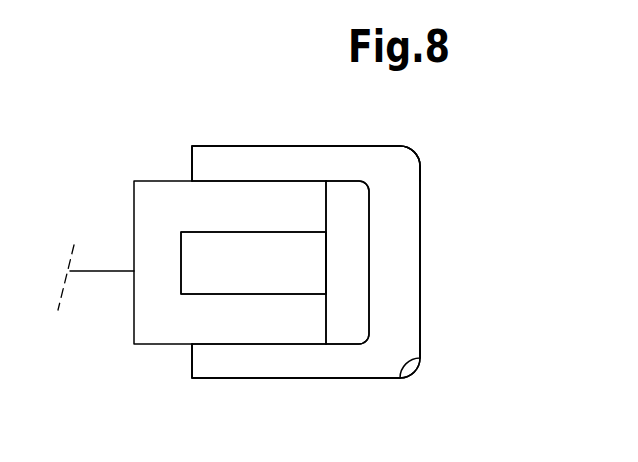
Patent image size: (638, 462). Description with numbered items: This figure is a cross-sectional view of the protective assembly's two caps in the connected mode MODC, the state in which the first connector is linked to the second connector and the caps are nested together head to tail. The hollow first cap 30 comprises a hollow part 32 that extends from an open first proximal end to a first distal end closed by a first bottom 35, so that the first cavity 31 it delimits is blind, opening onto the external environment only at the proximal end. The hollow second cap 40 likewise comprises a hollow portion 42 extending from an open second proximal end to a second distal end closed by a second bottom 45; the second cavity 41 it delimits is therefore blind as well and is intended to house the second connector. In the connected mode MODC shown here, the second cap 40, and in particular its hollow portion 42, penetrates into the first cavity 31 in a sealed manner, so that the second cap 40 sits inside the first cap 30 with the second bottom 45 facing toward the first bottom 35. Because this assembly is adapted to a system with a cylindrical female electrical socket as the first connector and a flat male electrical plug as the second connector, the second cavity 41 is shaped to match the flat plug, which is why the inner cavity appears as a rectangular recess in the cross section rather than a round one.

The first cap 30 is at (448, 339).
The connected mode MODC is at (453, 163).
The first cavity 31 is at (326, 294).
The hollow part 32 is at (295, 364).
The first bottom 35 is at (420, 202).
The second cap 40 is at (99, 191).
The second cavity 41 is at (288, 252).
The hollow portion 42 is at (247, 204).
The second bottom 45 is at (134, 314).